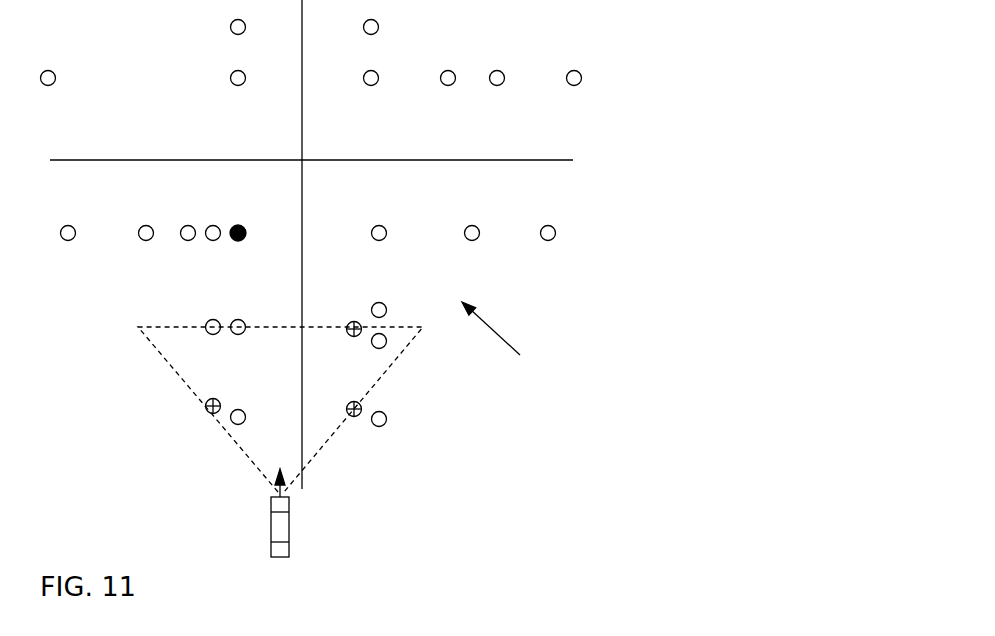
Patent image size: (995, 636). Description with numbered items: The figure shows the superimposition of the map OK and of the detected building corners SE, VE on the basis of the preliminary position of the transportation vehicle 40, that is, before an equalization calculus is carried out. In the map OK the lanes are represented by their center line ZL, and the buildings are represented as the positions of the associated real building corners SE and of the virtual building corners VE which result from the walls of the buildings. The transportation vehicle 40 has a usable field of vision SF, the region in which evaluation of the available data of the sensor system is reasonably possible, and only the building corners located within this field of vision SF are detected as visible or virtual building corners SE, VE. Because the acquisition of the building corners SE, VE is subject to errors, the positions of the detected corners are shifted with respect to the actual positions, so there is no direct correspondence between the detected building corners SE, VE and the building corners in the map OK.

The center line ZL is at (560, 160).
The real building corner SE is at (208, 225).
The virtual building corner VE is at (232, 239).
The map OK is at (509, 340).
The usable field of vision SF is at (325, 442).
The transportation vehicle 40 is at (272, 524).